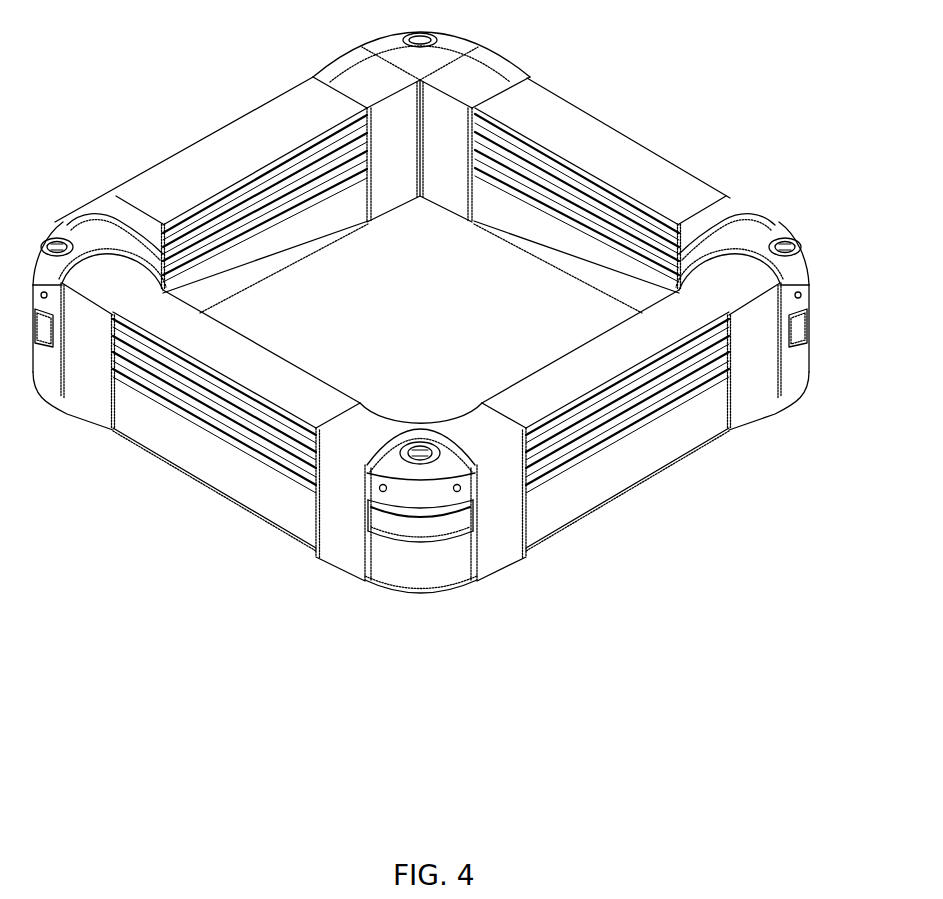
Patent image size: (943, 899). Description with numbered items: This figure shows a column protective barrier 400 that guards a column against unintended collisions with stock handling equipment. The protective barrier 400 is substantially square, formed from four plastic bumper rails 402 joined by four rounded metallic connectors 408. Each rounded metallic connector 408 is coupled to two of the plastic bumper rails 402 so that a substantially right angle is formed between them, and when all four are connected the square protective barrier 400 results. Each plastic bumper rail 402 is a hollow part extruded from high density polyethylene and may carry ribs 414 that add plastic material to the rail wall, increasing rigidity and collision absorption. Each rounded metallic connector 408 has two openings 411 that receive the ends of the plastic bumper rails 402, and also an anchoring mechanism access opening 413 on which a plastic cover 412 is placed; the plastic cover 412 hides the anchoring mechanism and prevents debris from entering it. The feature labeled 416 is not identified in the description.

The protective barrier 400 is at (436, 404).
The plastic bumper rail 402 is at (268, 375).
The rounded metallic connector 408 is at (797, 377).
The opening 411 is at (704, 194).
The plastic cover 412 is at (778, 237).
The anchoring mechanism access opening 413 is at (408, 432).
The rib 414 is at (207, 430).
The side window 416 is at (808, 297).